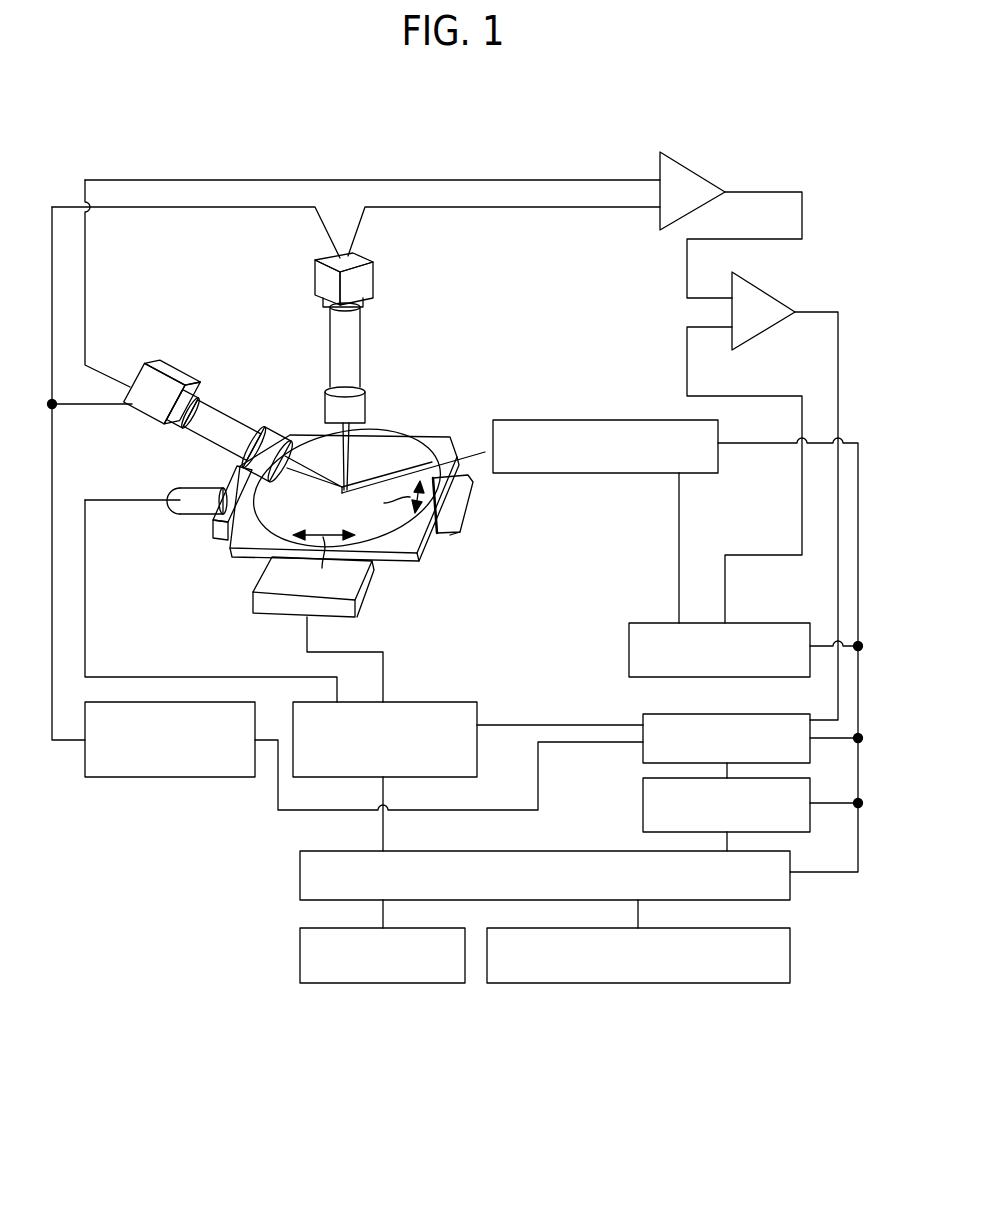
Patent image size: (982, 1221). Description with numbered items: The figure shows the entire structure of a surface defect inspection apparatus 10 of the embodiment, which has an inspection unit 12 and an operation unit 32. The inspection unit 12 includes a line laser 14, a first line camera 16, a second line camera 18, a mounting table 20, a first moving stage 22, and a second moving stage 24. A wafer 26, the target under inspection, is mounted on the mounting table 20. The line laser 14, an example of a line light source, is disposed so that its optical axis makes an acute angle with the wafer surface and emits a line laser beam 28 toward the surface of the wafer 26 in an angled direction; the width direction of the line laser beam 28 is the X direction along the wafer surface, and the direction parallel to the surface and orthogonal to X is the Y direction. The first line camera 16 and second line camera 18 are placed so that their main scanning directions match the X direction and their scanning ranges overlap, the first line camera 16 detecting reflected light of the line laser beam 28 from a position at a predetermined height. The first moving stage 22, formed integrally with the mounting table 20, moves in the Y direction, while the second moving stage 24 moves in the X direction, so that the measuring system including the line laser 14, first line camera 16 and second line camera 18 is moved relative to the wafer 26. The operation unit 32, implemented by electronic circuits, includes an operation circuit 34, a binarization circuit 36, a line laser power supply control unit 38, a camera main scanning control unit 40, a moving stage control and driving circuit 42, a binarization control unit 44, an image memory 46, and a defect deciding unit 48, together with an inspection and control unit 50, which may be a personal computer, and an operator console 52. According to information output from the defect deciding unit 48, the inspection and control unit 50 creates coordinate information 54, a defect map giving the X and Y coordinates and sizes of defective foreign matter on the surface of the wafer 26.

The surface defect inspection apparatus 10 is at (575, 135).
The inspection unit 12 is at (240, 137).
The line laser 14 is at (403, 475).
The first line camera 16 is at (360, 345).
The second line camera 18 is at (215, 405).
The mounting table 20 is at (417, 560).
The first moving stage 22 is at (212, 527).
The second moving stage 24 is at (258, 583).
The wafer 26 is at (470, 508).
The line laser beam 28 is at (370, 478).
The operation unit 32 is at (220, 903).
The operation circuit 34 is at (695, 163).
The binarization circuit 36 is at (765, 290).
The line laser power supply control unit 38 is at (610, 420).
The camera main scanning control unit 40 is at (170, 778).
The moving stage control and driving circuit 42 is at (445, 702).
The binarization control unit 44 is at (650, 623).
The image memory 46 is at (643, 714).
The defect deciding unit 48 is at (643, 803).
The inspection and control unit 50 is at (300, 873).
The operator console 52 is at (300, 955).
The coordinate information 54 is at (638, 983).